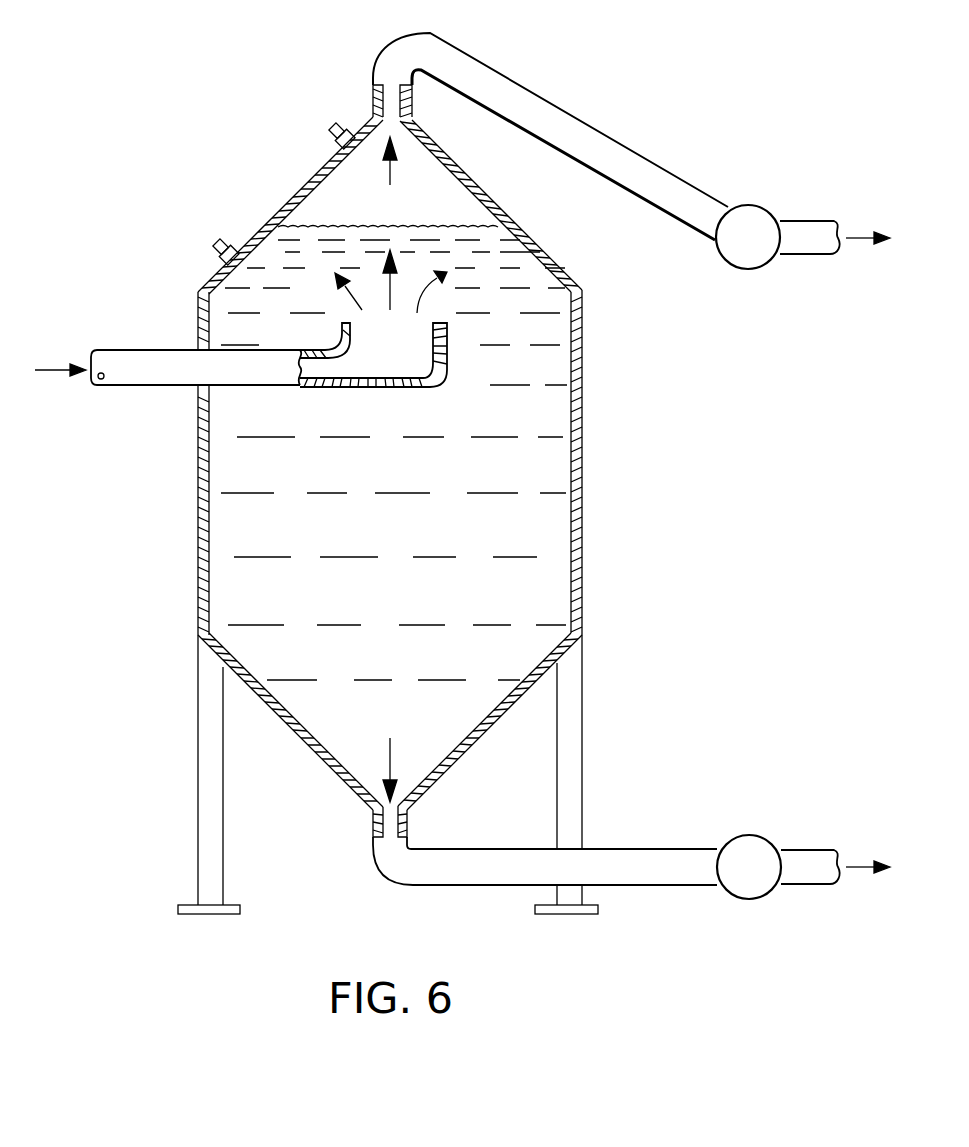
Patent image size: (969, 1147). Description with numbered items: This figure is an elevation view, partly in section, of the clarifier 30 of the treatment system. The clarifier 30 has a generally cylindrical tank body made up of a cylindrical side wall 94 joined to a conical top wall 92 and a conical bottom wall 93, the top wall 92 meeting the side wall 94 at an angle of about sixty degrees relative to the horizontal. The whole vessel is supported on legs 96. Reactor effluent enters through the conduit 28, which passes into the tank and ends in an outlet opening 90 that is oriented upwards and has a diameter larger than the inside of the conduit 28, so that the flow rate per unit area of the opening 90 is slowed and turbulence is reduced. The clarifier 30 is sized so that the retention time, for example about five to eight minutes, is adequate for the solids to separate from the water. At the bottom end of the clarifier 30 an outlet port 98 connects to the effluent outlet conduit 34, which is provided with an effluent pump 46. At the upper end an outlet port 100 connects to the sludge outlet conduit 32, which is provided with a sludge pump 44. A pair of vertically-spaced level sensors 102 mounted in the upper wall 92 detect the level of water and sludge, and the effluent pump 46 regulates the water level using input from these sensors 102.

The conduit 28 is at (145, 362).
The clarifier 30 is at (199, 181).
The sludge outlet conduit 32 is at (622, 138).
The effluent outlet conduit 34 is at (482, 870).
The sludge pump 44 is at (760, 205).
The effluent pump 46 is at (739, 836).
The outlet opening 90 is at (427, 322).
The conical top wall 92 is at (300, 187).
The conical bottom wall 93 is at (478, 742).
The cylindrical side wall 94 is at (198, 495).
The legs 96 is at (205, 760).
The outlet port 98 is at (370, 792).
The outlet port 100 is at (372, 117).
The level sensors 102 is at (332, 128).